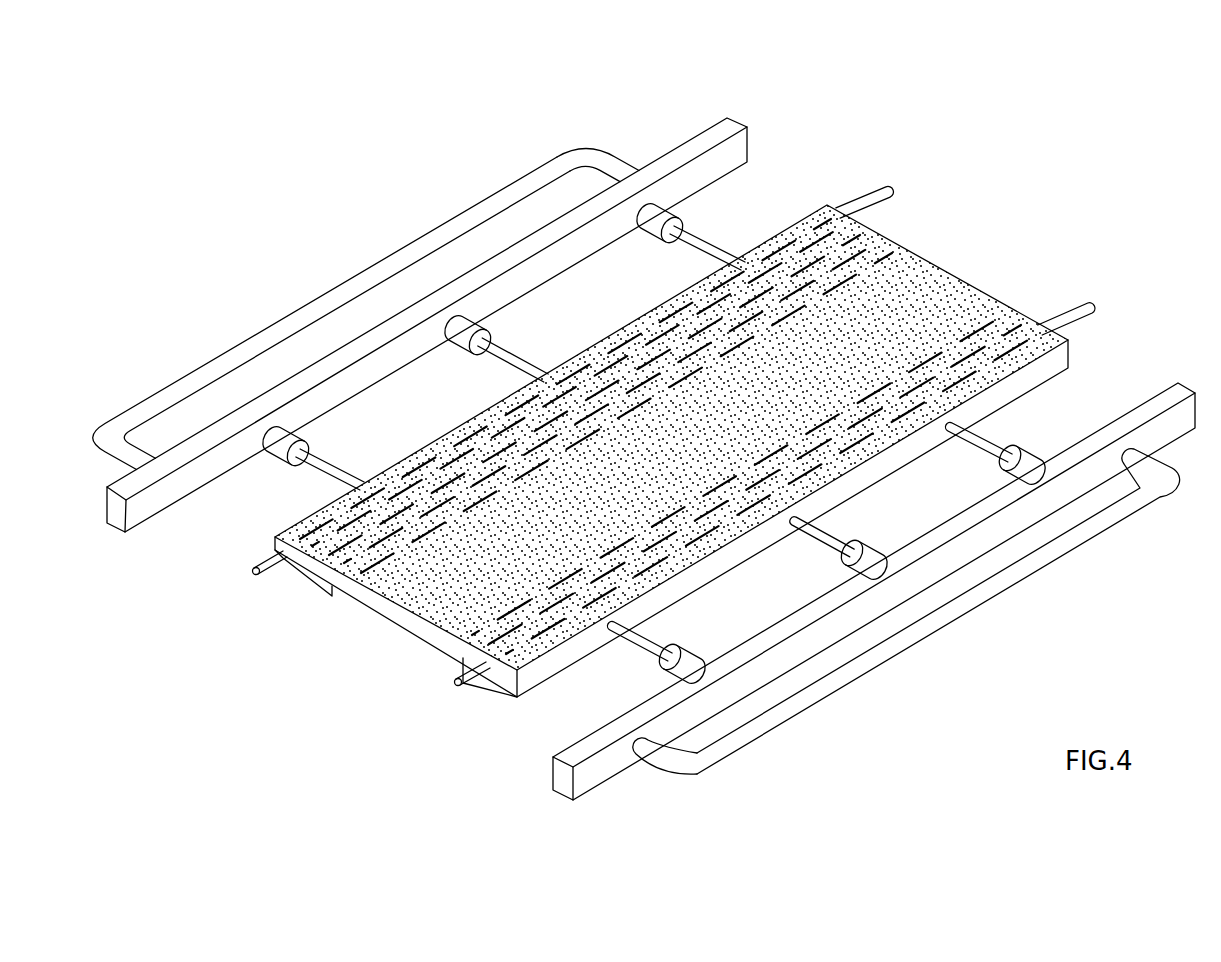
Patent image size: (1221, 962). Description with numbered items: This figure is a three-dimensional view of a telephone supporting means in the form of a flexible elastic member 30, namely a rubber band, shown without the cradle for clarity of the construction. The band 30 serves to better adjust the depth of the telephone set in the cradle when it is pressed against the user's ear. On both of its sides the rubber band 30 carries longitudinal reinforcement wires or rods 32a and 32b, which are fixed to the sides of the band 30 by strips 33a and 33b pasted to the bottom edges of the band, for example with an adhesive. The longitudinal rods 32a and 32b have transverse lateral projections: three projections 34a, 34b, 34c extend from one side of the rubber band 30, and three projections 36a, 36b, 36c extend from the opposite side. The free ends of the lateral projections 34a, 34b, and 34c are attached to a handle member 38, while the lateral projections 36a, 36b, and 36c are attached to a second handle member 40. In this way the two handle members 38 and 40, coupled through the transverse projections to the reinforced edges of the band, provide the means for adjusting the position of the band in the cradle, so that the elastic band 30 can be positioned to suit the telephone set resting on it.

The flexible elastic member 30 is at (935, 300).
The longitudinal reinforcement rod 32a is at (255, 575).
The longitudinal reinforcement rod 32b is at (457, 685).
The strip 33a is at (310, 577).
The strip 33b is at (498, 685).
The lateral projection 34a is at (650, 653).
The lateral projection 34b is at (838, 553).
The lateral projection 34c is at (998, 440).
The lateral projection 36a is at (328, 463).
The lateral projection 36b is at (512, 357).
The lateral projection 36c is at (717, 262).
The handle member 38 is at (747, 680).
The handle member 40 is at (420, 303).